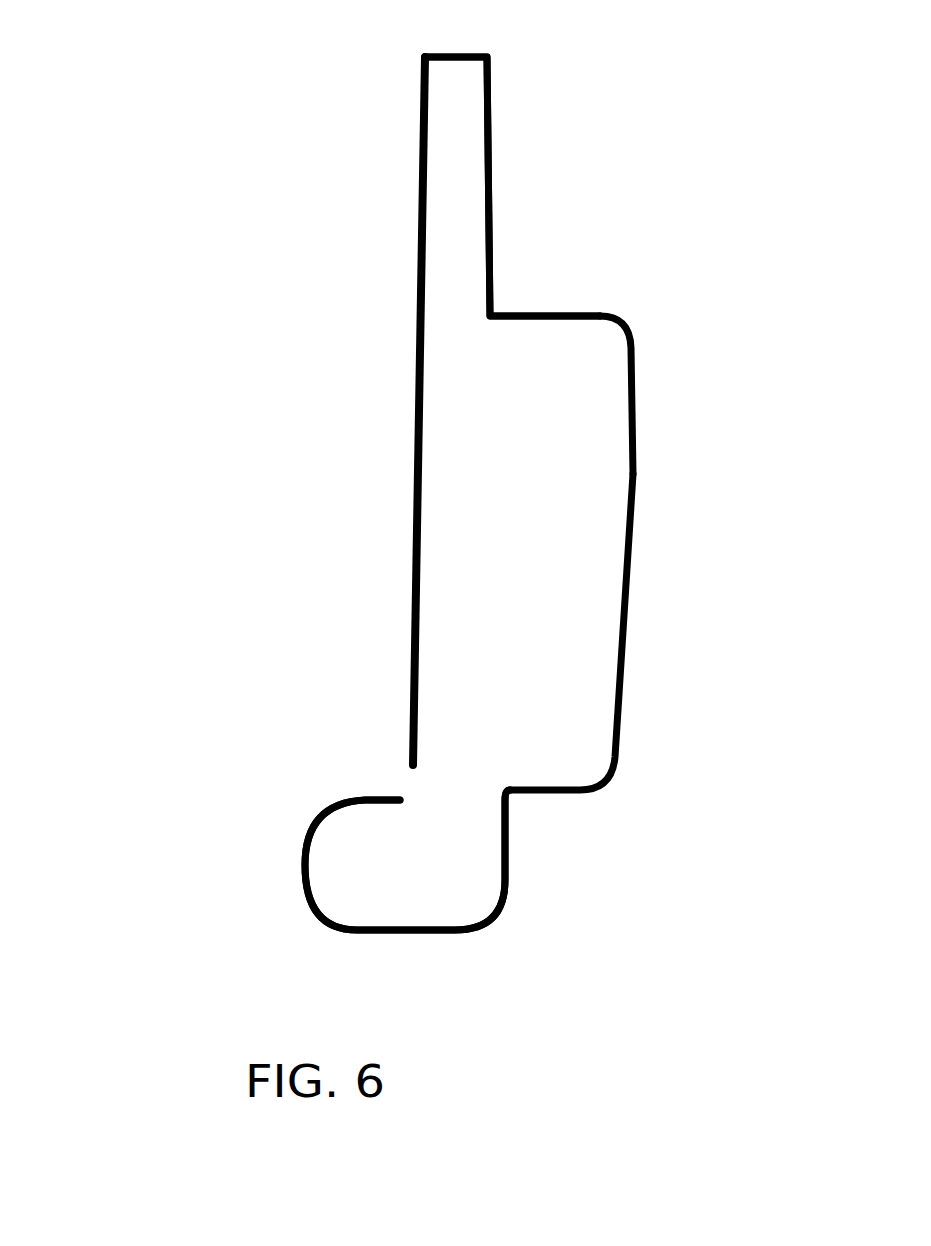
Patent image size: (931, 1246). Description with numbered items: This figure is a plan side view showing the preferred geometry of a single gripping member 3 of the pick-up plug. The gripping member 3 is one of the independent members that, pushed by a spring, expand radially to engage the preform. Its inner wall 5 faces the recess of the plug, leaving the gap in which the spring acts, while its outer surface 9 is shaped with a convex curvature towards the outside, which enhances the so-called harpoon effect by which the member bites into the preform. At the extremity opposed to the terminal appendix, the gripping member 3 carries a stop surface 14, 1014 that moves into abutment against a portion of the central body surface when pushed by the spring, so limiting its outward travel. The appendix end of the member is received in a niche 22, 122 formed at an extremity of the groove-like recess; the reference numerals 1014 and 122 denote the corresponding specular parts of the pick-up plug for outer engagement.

The gripping member 3 is at (550, 635).
The inner wall 5 is at (413, 512).
The outer surface 9 is at (633, 474).
The stop surface 14 is at (490, 117).
The stop surface 1014 is at (490, 117).
The niche 22 is at (305, 882).
The niche 122 is at (305, 882).